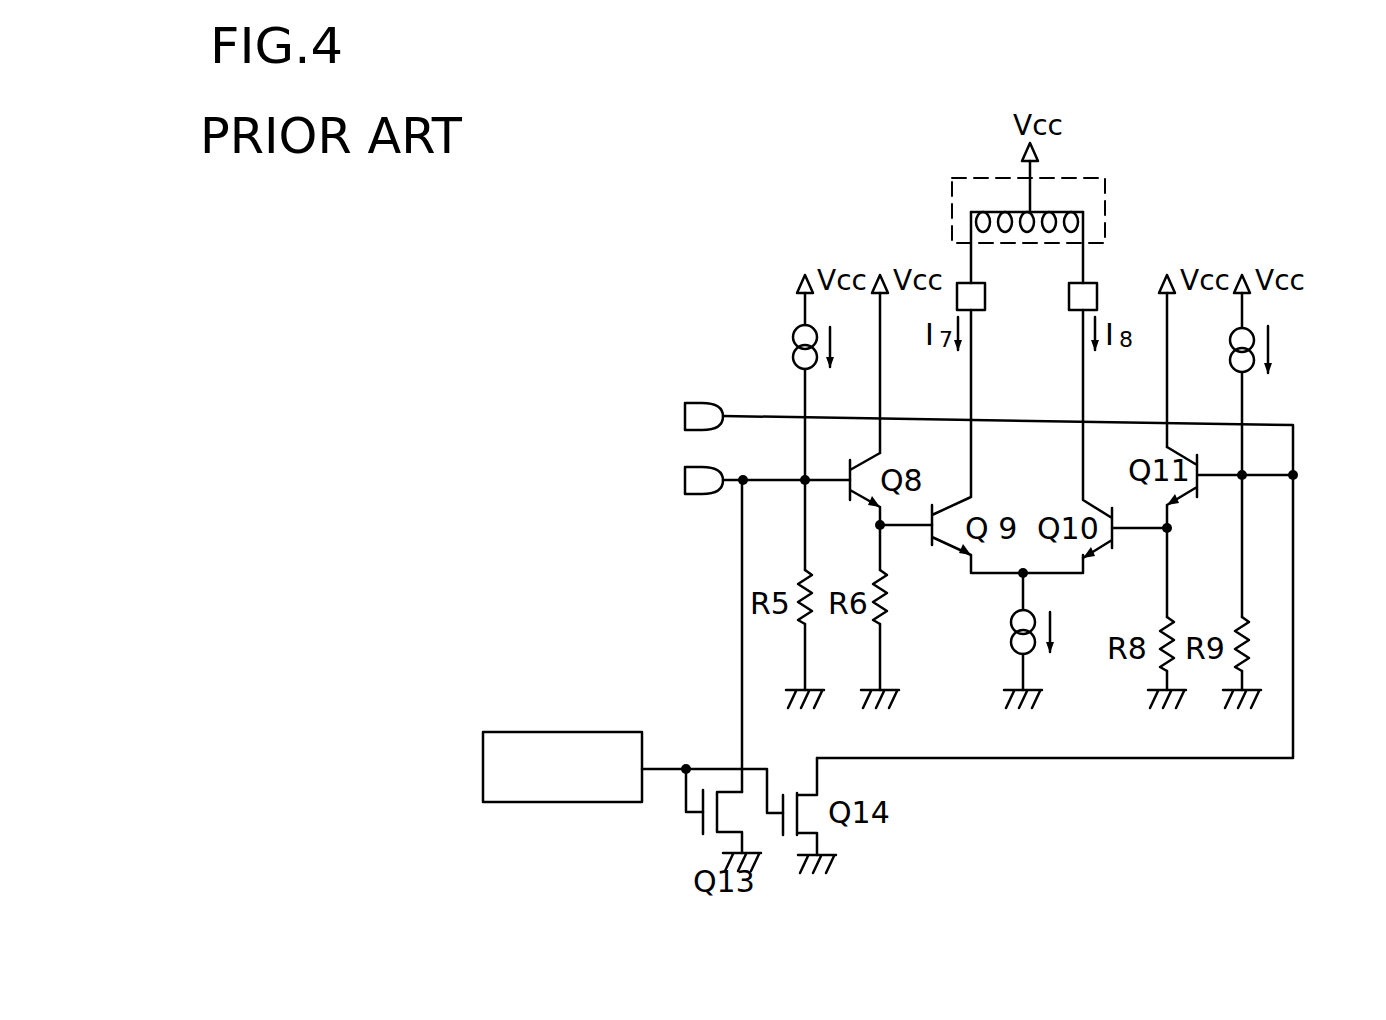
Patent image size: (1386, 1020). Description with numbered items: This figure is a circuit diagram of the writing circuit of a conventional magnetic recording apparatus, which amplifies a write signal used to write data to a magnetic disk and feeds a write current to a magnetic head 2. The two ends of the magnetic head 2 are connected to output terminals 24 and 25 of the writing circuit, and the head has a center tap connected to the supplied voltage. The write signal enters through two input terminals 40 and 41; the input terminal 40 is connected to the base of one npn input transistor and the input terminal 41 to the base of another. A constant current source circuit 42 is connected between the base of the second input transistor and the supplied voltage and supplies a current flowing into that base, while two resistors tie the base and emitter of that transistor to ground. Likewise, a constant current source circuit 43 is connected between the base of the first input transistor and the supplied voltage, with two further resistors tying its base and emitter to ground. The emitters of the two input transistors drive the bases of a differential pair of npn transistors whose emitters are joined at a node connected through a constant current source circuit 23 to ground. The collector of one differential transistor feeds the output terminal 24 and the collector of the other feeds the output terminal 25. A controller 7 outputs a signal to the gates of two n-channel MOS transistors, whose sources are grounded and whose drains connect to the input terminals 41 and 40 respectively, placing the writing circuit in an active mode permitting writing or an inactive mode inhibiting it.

The magnetic head 2 is at (1098, 178).
The output terminal 24 is at (958, 290).
The output terminal 25 is at (1098, 300).
The input terminal 40 is at (686, 405).
The input terminal 41 is at (686, 471).
The constant current source circuit 42 is at (793, 337).
The constant current source circuit 43 is at (1246, 328).
The constant current source circuit 23 is at (1008, 648).
The controller 7 is at (563, 803).